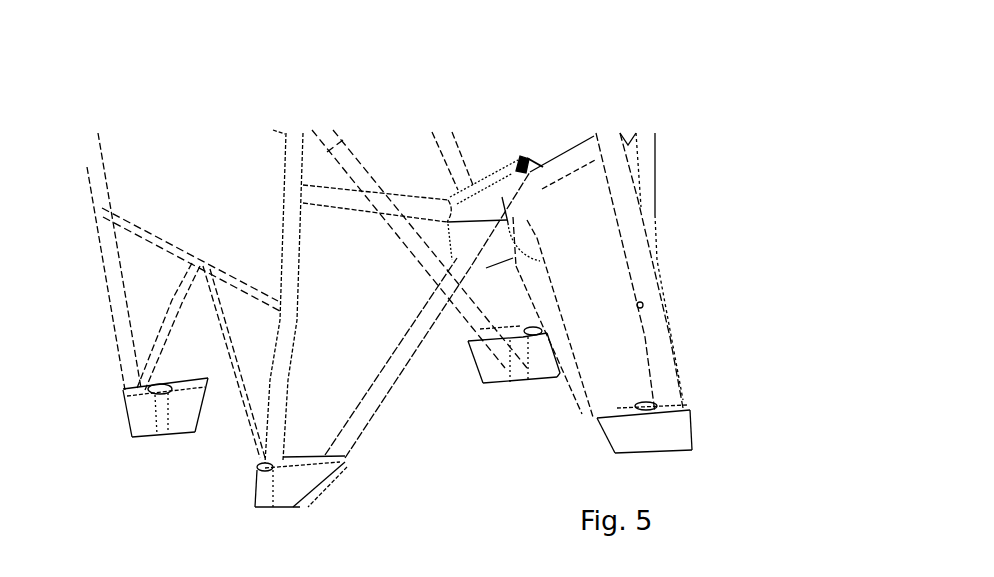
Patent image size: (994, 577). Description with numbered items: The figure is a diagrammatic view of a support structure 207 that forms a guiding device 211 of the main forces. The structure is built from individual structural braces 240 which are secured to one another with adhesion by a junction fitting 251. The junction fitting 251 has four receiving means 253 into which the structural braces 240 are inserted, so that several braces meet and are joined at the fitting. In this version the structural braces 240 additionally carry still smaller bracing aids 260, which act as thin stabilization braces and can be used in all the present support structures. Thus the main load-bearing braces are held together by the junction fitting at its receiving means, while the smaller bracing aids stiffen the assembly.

The support structure 207 is at (634, 84).
The guiding device 211 is at (358, 112).
The structural braces 240 is at (375, 395).
The junction fitting 251 is at (474, 144).
The receiving means 253 is at (519, 152).
The bracing aids 260 is at (166, 240).